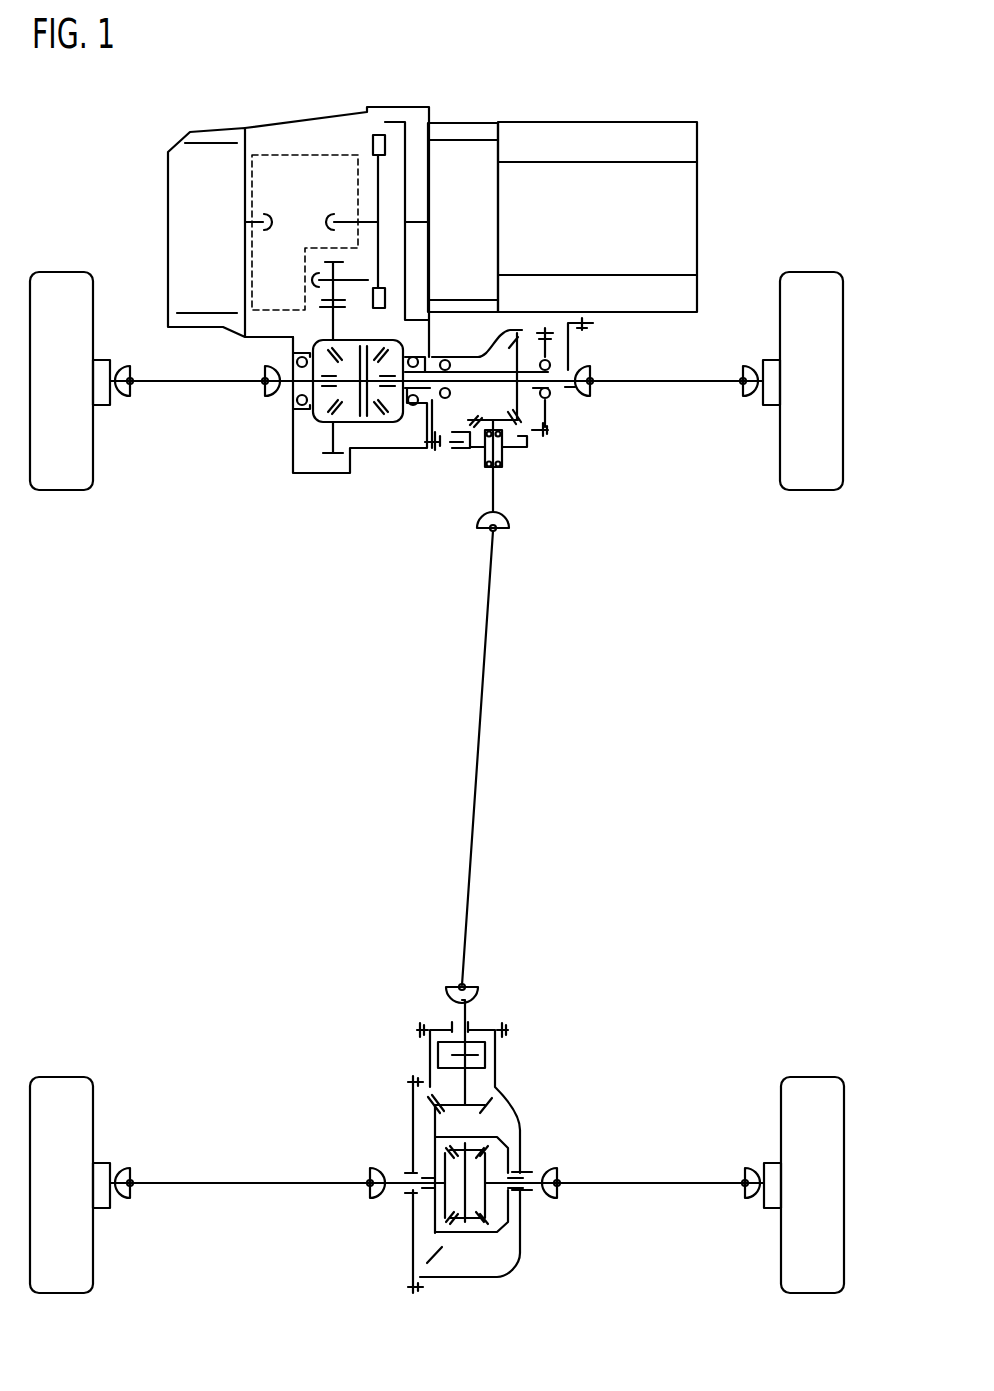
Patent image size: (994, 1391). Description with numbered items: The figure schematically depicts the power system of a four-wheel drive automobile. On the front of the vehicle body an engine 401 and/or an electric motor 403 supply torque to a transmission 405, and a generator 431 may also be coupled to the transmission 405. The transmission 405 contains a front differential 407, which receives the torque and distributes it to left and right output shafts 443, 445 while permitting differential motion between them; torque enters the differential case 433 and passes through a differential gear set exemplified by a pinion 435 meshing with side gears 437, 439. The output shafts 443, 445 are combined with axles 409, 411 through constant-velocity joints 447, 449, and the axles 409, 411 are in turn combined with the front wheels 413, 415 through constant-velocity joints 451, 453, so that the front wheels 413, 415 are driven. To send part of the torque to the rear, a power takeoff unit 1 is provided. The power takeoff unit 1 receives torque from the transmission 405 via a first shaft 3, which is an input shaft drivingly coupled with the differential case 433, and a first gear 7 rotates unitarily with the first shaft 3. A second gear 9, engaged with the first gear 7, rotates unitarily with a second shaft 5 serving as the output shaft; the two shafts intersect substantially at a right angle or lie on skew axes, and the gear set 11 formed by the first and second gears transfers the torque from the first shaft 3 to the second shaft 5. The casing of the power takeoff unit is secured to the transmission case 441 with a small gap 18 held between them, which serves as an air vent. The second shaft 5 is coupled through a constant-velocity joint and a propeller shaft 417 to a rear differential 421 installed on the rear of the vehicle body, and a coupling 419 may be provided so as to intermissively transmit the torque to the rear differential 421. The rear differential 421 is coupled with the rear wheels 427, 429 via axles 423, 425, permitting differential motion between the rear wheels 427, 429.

The power takeoff unit 1 is at (563, 460).
The first shaft 3 is at (472, 368).
The second shaft 5 is at (502, 455).
The first gear 7 is at (514, 327).
The second gear 9 is at (460, 428).
The gear set 11 is at (540, 418).
The small gap 18 is at (440, 435).
The engine 401 is at (598, 122).
The electric motor 403 is at (467, 123).
The transmission 405 is at (316, 106).
The front differential 407 is at (310, 462).
The axle 409 is at (178, 385).
The axle 411 is at (692, 385).
The front wheel 413 is at (62, 490).
The front wheel 415 is at (810, 490).
The propeller shaft 417 is at (479, 745).
The coupling 419 is at (517, 1064).
The rear differential 421 is at (512, 1244).
The axle 423 is at (228, 1186).
The axle 425 is at (666, 1186).
The rear wheel 427 is at (62, 1293).
The rear wheel 429 is at (812, 1293).
The generator 431 is at (206, 130).
The differential case 433 is at (367, 423).
The pinion 435 is at (385, 350).
The side gear 437 is at (297, 360).
The side gear 439 is at (405, 420).
The transmission case 441 is at (380, 450).
The output shaft 443 is at (310, 417).
The output shaft 445 is at (542, 360).
The constant-velocity joint 447 is at (265, 400).
The constant-velocity joint 449 is at (596, 370).
The constant-velocity joint 451 is at (128, 400).
The constant-velocity joint 453 is at (745, 400).